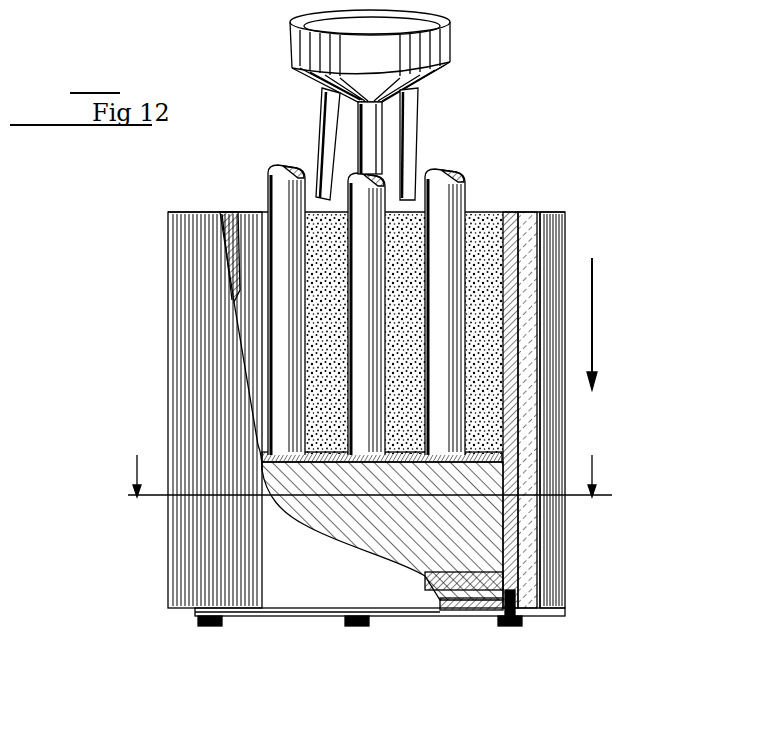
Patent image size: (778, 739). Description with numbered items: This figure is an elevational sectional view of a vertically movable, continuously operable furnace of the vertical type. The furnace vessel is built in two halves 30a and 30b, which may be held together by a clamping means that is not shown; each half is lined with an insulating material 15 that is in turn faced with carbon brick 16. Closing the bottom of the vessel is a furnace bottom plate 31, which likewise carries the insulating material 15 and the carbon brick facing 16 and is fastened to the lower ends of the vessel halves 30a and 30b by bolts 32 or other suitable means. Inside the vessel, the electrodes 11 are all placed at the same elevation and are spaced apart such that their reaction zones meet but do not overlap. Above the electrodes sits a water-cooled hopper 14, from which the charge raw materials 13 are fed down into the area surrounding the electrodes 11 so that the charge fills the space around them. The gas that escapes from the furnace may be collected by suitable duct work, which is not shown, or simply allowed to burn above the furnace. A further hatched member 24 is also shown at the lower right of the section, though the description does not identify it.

The electrodes 11 is at (282, 176).
The charge raw materials 13 is at (260, 452).
The water-cooled hopper 14 is at (452, 42).
The insulating material 15 is at (522, 215).
The carbon brick 16 is at (500, 578).
The bar 24 is at (520, 590).
The furnace vessel half 30a is at (205, 548).
The furnace vessel half 30b is at (533, 543).
The furnace bottom plate 31 is at (400, 616).
The bolts 32 is at (205, 620).